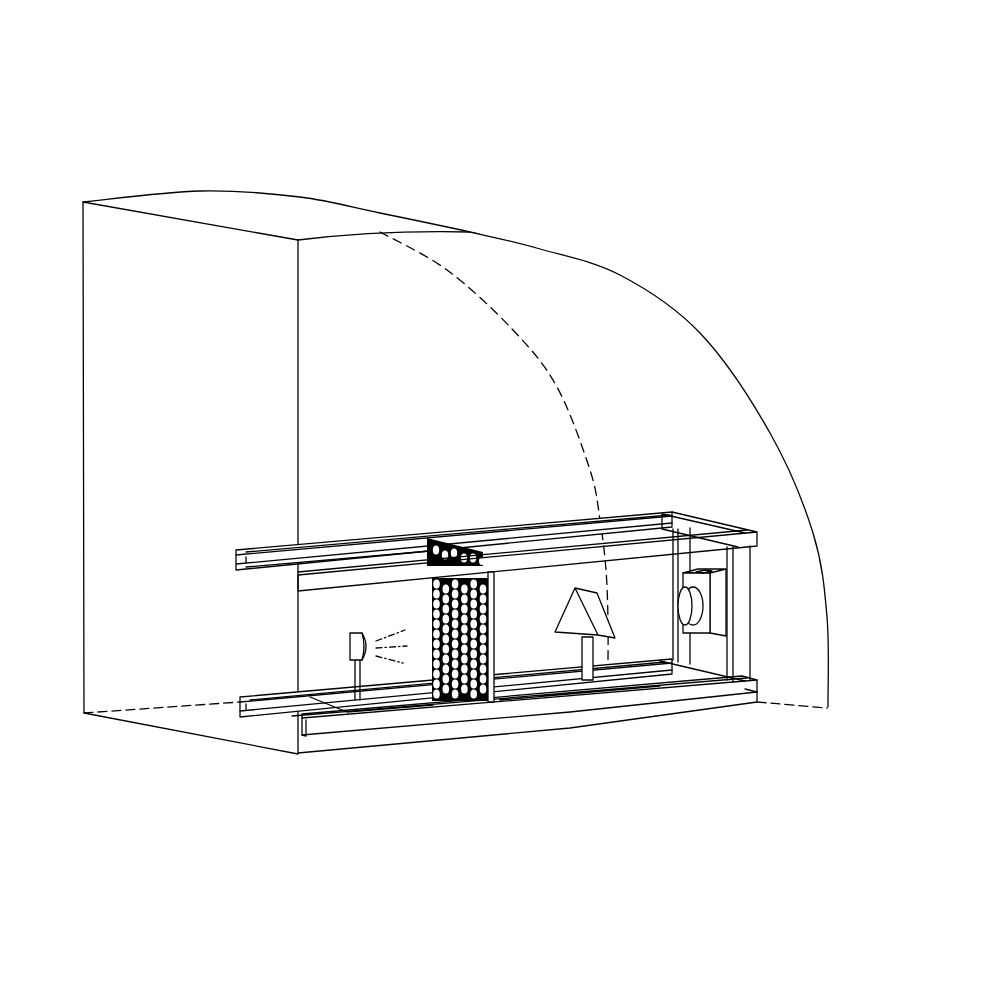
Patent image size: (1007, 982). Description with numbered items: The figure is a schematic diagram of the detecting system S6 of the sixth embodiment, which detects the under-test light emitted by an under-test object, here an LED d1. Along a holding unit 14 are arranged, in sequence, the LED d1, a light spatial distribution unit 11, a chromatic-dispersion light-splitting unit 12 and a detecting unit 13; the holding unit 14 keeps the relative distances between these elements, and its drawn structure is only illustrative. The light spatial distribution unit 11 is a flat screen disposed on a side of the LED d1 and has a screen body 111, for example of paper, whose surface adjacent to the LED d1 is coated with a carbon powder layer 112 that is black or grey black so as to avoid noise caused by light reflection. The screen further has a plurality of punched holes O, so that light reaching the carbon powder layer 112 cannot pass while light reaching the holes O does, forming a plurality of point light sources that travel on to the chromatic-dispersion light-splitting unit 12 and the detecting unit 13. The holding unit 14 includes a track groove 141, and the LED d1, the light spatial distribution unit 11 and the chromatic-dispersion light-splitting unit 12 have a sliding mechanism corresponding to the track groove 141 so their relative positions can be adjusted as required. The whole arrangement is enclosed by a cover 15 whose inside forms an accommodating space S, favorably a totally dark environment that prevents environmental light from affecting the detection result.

The detecting system S6 is at (254, 72).
The accommodating space S is at (118, 317).
The cover 15 is at (621, 273).
The light spatial distribution unit 11 is at (440, 535).
The track groove 141 is at (236, 707).
The holding unit 14 is at (681, 691).
The LED d1 is at (350, 647).
The chromatic-dispersion light-splitting unit 12 is at (567, 617).
The detecting unit 13 is at (678, 606).
The holes O is at (428, 669).
The carbon powder layer 112 is at (452, 701).
The screen body 111 is at (495, 701).